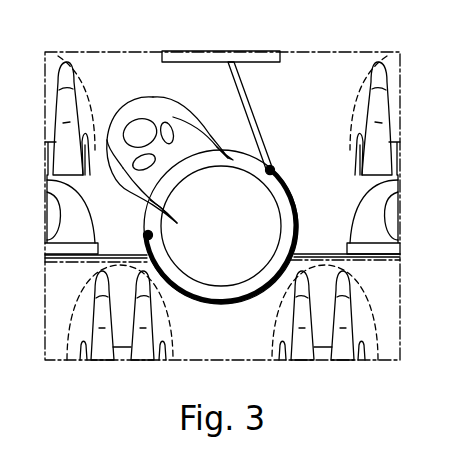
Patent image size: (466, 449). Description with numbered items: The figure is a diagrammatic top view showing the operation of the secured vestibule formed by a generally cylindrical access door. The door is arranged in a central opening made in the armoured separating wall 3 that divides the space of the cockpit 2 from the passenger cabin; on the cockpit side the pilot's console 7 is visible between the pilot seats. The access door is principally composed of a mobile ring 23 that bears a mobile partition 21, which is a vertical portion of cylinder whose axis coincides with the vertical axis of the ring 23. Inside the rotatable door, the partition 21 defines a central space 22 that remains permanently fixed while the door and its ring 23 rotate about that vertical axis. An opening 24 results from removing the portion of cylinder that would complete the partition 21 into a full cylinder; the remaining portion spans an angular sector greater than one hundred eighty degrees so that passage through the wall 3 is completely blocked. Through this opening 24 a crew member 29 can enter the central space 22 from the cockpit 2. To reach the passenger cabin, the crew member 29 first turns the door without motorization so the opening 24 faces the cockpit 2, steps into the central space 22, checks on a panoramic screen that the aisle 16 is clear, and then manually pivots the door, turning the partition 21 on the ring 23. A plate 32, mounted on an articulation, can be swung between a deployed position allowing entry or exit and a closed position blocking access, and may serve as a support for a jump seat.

The cockpit 2 is at (400, 112).
The armoured separating wall 3 is at (388, 262).
The pilot's console 7 is at (197, 64).
The aisle 16 is at (235, 340).
The mobile partition 21 is at (291, 187).
The central space 22 is at (235, 226).
The mobile ring 23 is at (287, 213).
The opening 24 is at (233, 141).
The crew member 29 is at (143, 96).
The plate 32 is at (260, 137).